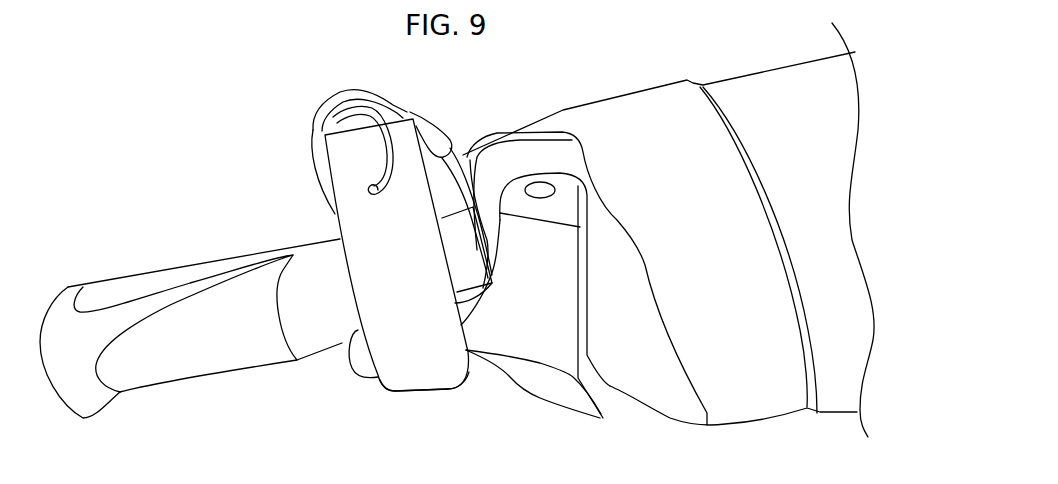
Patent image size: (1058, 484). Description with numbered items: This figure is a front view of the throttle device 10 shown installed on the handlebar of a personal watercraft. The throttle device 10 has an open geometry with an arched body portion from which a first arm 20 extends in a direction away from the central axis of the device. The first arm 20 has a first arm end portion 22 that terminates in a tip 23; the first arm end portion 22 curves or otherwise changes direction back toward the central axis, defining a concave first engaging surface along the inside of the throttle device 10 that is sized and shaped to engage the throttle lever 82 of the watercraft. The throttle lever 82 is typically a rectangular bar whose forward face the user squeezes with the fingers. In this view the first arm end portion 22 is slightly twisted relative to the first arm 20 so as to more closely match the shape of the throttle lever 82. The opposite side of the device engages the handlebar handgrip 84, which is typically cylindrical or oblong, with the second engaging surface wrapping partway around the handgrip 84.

The throttle device 10 is at (353, 227).
The first arm 20 is at (407, 254).
The first arm end portion 22 is at (428, 342).
The tip 23 is at (418, 380).
The throttle lever 82 is at (510, 342).
The handlebar handgrip 84 is at (230, 332).